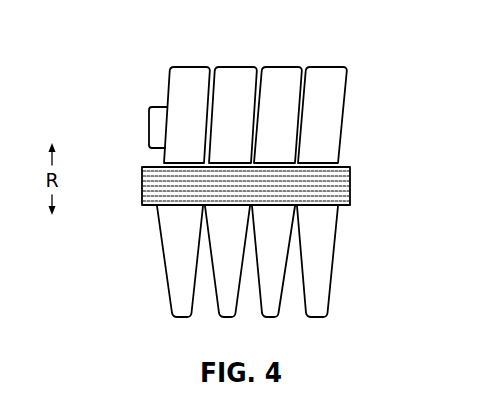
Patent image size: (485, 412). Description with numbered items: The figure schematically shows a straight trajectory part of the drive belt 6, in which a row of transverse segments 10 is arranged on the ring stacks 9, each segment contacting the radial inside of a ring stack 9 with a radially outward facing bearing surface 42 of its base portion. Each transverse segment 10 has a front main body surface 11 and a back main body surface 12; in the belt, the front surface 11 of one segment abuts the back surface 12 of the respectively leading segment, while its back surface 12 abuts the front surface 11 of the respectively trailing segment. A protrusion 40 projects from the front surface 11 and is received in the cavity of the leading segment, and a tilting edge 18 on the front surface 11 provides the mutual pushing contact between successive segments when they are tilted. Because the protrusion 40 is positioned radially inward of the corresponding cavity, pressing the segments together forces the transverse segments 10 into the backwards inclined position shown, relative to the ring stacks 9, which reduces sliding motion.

The drive belt 6 is at (101, 73).
The ring stacks 9 is at (350, 181).
The transverse segments 10 is at (260, 103).
The front main body surface 11 is at (173, 92).
The back main body surface 12 is at (357, 88).
The tilting edge 18 is at (218, 261).
The protrusion 40 is at (160, 126).
The bearing surface 42 is at (180, 214).